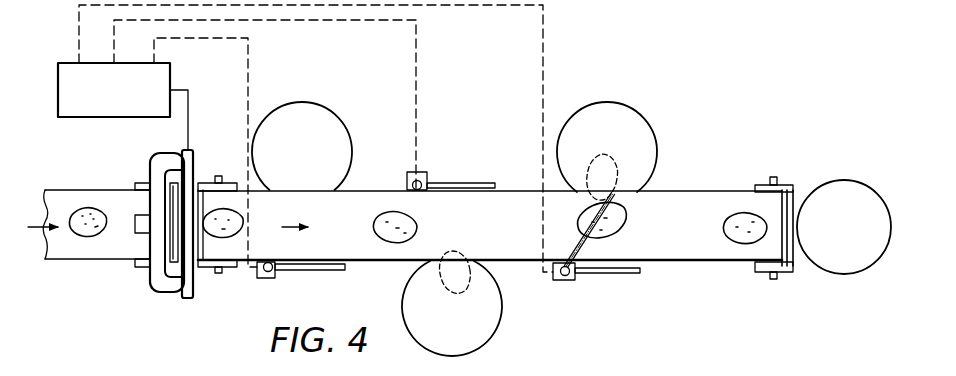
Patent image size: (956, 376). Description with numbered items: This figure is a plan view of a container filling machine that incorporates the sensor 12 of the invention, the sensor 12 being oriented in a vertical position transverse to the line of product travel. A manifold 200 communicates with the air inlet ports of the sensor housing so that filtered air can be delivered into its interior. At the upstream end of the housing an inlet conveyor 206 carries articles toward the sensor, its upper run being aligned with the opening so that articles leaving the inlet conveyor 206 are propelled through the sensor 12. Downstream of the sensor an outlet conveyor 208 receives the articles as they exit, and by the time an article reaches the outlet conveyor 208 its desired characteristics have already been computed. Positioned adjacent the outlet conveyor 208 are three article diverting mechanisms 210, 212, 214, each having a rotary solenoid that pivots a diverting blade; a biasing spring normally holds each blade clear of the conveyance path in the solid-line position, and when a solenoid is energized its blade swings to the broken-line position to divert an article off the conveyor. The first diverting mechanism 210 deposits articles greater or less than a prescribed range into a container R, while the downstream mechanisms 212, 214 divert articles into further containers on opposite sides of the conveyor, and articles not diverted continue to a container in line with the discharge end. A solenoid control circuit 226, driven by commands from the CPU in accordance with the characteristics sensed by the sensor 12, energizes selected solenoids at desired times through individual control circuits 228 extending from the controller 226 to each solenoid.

The sensor 12 is at (196, 285).
The manifold 200 is at (154, 287).
The inlet conveyor 206 is at (102, 260).
The outlet conveyor 208 is at (385, 262).
The article diverting mechanism 210 is at (291, 280).
The article diverting mechanism 212 is at (459, 176).
The article diverting mechanism 214 is at (606, 279).
The solenoid control circuit 226 is at (170, 65).
The individual control circuits 228 is at (250, 62).
The container R is at (318, 104).